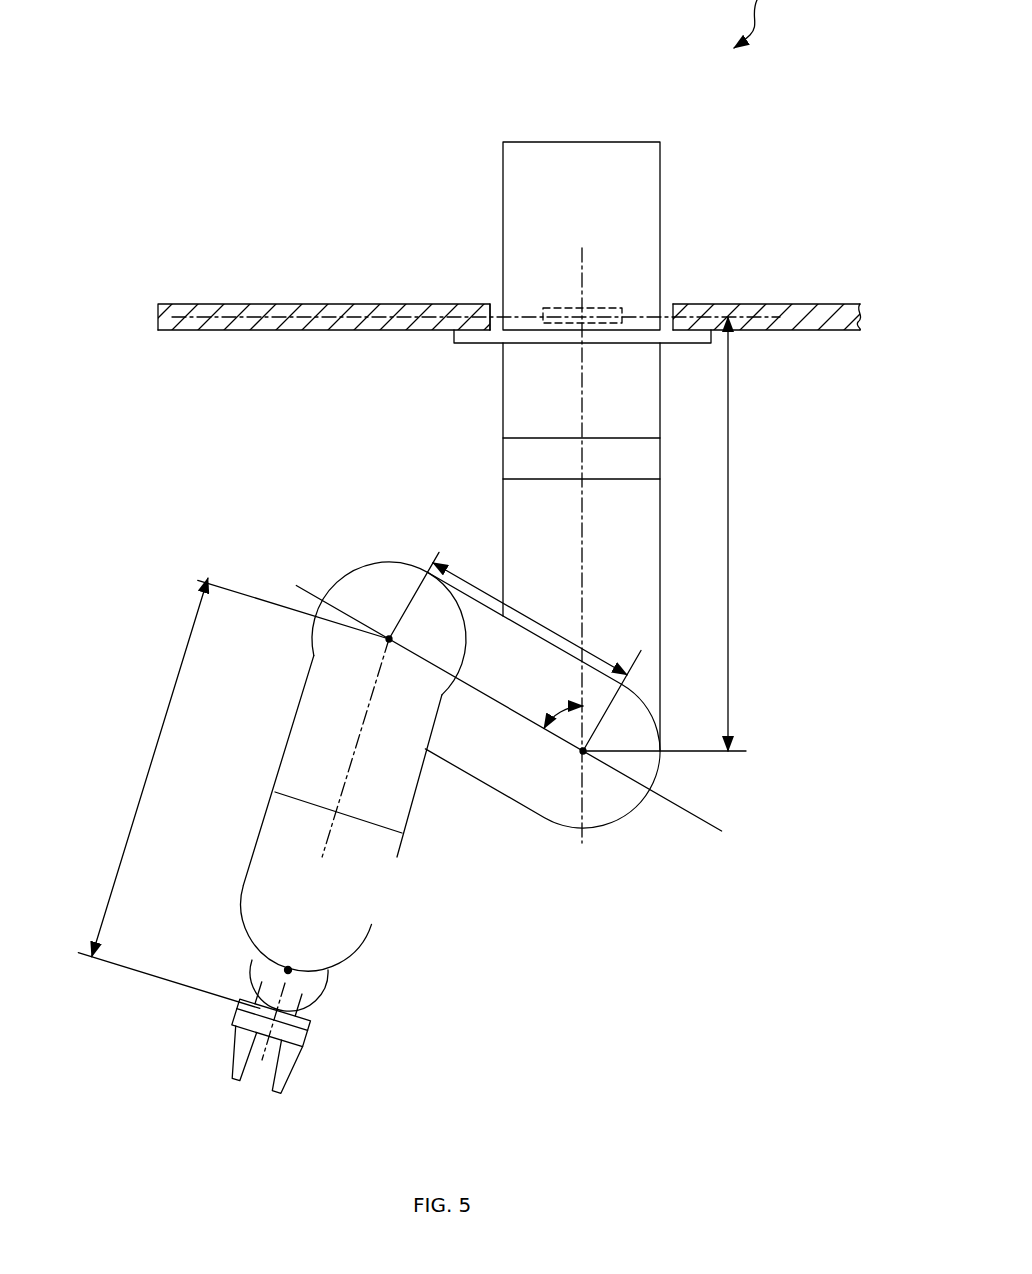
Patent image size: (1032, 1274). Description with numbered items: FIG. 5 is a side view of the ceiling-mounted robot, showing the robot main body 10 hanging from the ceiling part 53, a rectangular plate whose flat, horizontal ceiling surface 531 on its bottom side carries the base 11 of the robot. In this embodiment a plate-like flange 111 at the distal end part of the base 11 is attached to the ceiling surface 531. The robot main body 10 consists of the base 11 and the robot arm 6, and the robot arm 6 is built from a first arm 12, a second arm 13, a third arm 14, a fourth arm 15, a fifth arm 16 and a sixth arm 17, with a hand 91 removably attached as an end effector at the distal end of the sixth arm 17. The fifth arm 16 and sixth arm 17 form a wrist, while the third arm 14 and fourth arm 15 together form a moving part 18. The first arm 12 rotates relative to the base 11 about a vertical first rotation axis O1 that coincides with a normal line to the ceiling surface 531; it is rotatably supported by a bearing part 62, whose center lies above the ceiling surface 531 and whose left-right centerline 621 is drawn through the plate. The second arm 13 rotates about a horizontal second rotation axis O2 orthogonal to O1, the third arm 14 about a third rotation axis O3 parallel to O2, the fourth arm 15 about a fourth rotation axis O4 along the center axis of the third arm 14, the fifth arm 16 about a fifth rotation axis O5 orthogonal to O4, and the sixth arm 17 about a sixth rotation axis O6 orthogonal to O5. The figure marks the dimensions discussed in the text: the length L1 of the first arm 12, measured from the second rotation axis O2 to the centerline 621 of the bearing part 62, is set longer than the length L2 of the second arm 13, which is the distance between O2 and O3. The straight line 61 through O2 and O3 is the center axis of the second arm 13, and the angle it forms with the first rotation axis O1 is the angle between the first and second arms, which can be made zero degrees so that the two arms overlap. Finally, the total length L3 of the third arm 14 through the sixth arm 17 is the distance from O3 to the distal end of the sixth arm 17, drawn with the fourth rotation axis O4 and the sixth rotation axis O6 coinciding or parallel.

The robot main body 10 is at (758, 100).
The base 11 is at (542, 492).
The flange 111 is at (472, 342).
The first arm 12 is at (500, 467).
The robot arm 6 is at (512, 547).
The second arm 13 is at (496, 797).
The third arm 14 is at (338, 723).
The fourth arm 15 is at (256, 835).
The fifth arm 16 is at (330, 983).
The sixth arm 17 is at (319, 1022).
The moving part 18 is at (300, 700).
The hand 91 is at (227, 1053).
The ceiling part 53 is at (482, 326).
The ceiling surface 531 is at (215, 332).
The straight line passing through the second and third rotation axes 61 is at (697, 836).
The bearing part 62 is at (605, 305).
The centerline 621 is at (762, 302).
The first rotation axis O1 is at (586, 515).
The second rotation axis O2 is at (584, 752).
The third rotation axis O3 is at (389, 638).
The fourth rotation axis O4 is at (350, 760).
The fifth rotation axis O5 is at (287, 970).
The sixth rotation axis O6 is at (257, 996).
The length of the first arm L1 is at (670, 534).
The length of the second arm L2 is at (515, 651).
The total length of the third arm to the sixth arm L3 is at (233, 793).